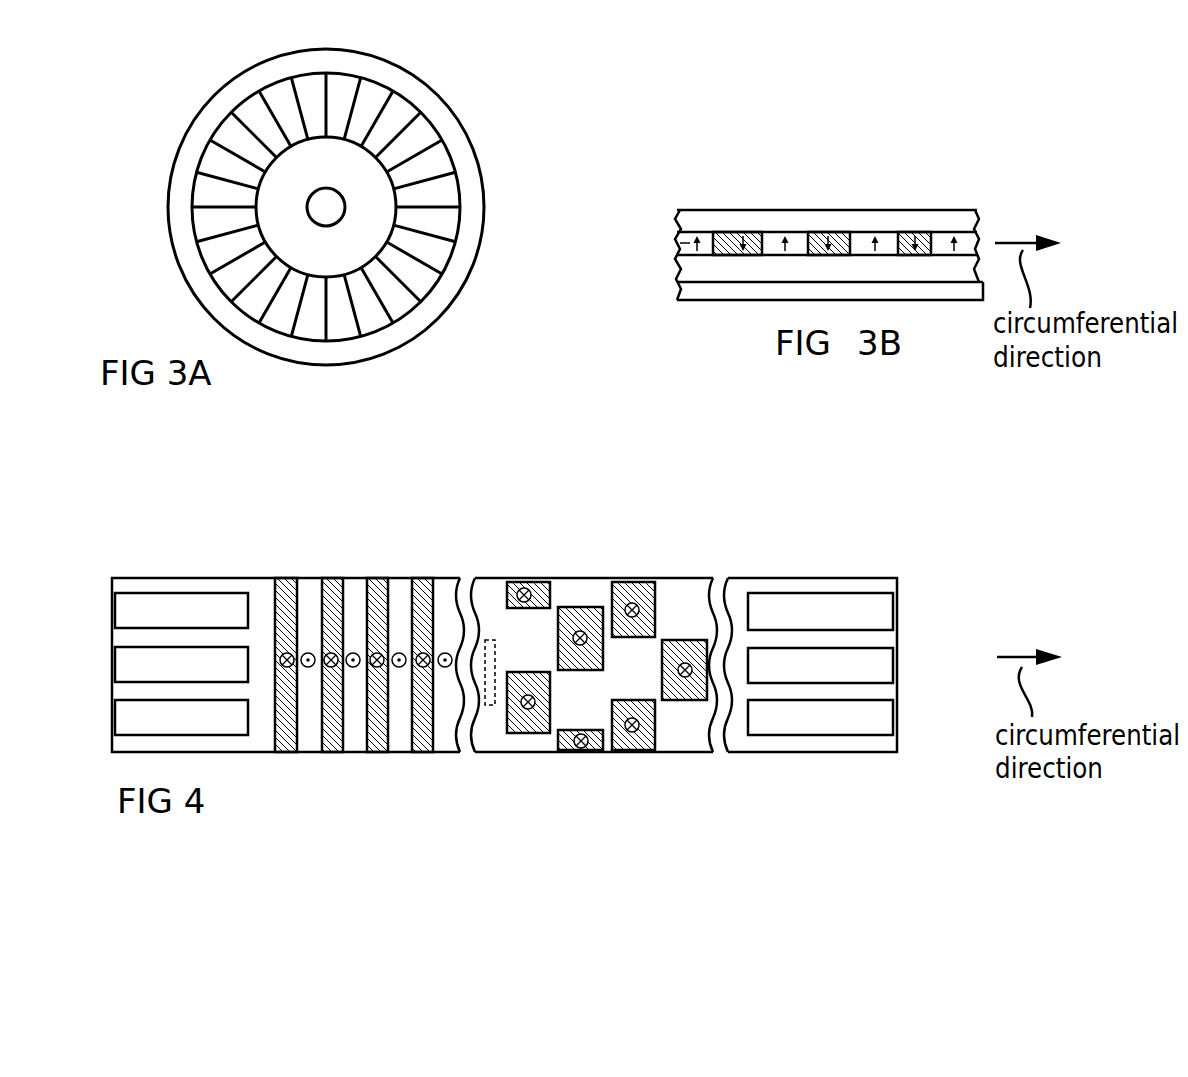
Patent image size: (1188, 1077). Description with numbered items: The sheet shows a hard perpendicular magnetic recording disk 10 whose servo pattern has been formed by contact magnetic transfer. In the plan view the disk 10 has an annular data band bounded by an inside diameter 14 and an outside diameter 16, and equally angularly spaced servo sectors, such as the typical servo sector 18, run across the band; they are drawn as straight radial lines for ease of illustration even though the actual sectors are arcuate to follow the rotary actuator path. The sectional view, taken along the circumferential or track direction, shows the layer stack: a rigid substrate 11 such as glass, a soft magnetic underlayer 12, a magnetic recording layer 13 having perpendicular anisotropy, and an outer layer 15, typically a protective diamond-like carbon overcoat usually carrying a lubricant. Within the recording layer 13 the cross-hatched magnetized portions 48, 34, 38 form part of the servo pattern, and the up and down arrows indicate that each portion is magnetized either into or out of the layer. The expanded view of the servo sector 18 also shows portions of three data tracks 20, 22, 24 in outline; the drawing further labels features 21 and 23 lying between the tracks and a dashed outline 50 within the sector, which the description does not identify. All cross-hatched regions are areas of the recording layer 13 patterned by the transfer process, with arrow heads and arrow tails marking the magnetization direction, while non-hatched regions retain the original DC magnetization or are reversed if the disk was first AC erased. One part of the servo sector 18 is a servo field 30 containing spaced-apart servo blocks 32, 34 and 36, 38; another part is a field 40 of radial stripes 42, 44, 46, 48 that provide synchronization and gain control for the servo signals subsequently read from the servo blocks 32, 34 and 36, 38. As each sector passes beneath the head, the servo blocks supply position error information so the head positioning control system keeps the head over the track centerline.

In FIG. 3A, the magnetic recording disk 10 is at (461, 76).
In FIG. 3B, the magnetic recording disk 10 is at (876, 159).
In FIG. 3A, the rigid substrate 11 is at (465, 127).
In FIG. 3B, the rigid substrate 11 is at (688, 293).
In FIG. 3B, the soft magnetic underlayer 12 is at (683, 268).
In FIG. 3B, the magnetic recording layer 13 is at (683, 243).
In FIG. 3A, the inside diameter 14 is at (272, 165).
In FIG. 3B, the outer layer 15 is at (687, 217).
In FIG. 3A, the outside diameter 16 is at (213, 127).
In FIG. 3A, the servo sector 18 is at (327, 328).
In FIG. 3B, the servo sector 18 is at (980, 113).
In FIG. 4, the servo sector 18 is at (713, 527).
In FIG. 4, the data track 20 is at (127, 612).
In FIG. 4, the track gap 21 is at (128, 642).
In FIG. 4, the data track 22 is at (128, 667).
In FIG. 4, the track gap 23 is at (127, 692).
In FIG. 4, the data track 24 is at (127, 720).
In FIG. 4, the servo field 30 is at (470, 565).
In FIG. 4, the servo block 32 is at (538, 735).
In FIG. 3B, the servo block 34 is at (827, 232).
In FIG. 4, the servo block 34 is at (588, 668).
In FIG. 4, the servo block 36 is at (647, 752).
In FIG. 3B, the servo block 38 is at (913, 232).
In FIG. 4, the servo block 38 is at (692, 702).
In FIG. 4, the synchronization/gain field 40 is at (287, 565).
In FIG. 4, the radial stripe 42 is at (293, 752).
In FIG. 4, the radial stripe 44 is at (328, 752).
In FIG. 4, the radial stripe 46 is at (372, 750).
In FIG. 3B, the radial stripe 48 is at (723, 232).
In FIG. 4, the radial stripe 48 is at (410, 752).
In FIG. 4, the read head element 50 is at (490, 675).